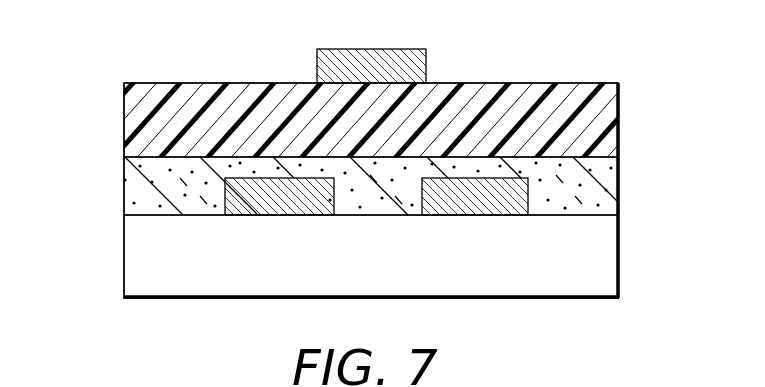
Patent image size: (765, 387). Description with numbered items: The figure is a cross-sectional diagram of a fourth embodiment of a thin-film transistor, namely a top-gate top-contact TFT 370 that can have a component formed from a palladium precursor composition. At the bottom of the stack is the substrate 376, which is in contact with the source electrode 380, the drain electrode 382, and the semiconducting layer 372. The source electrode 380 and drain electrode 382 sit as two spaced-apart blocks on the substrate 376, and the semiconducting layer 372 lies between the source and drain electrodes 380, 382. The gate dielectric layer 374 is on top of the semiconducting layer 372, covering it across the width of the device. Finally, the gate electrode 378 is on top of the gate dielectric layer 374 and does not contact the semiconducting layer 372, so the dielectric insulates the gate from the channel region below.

The TFT 370 is at (147, 46).
The semiconducting layer 372 is at (622, 193).
The gate dielectric layer 374 is at (117, 83).
The substrate 376 is at (612, 257).
The gate electrode 378 is at (352, 77).
The source electrode 380 is at (264, 210).
The drain electrode 382 is at (456, 210).